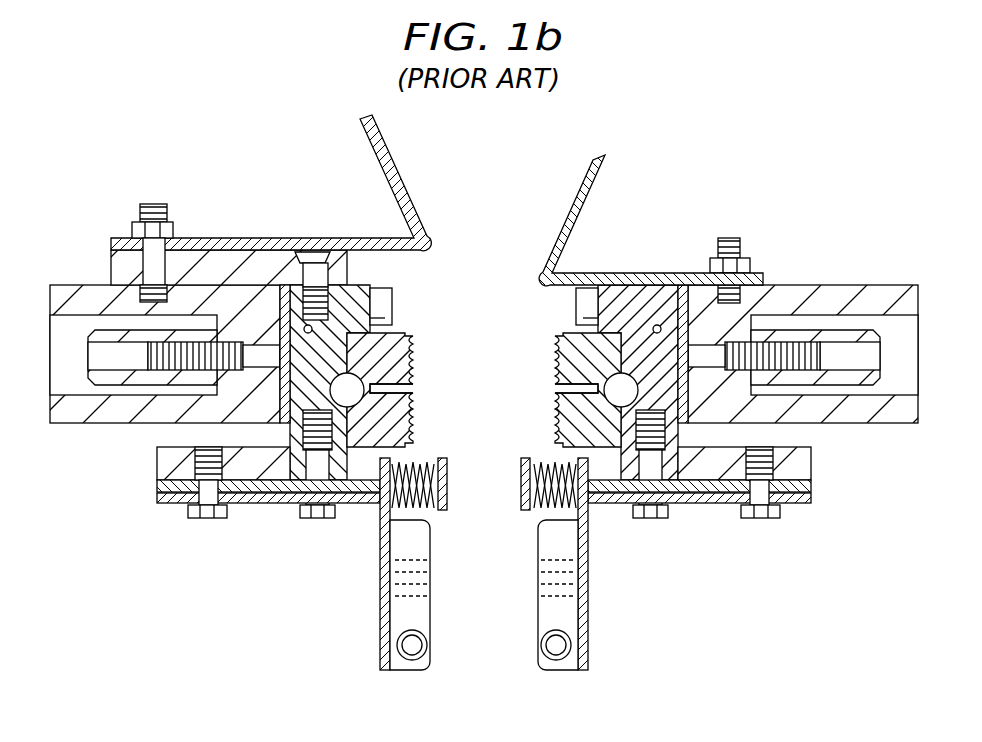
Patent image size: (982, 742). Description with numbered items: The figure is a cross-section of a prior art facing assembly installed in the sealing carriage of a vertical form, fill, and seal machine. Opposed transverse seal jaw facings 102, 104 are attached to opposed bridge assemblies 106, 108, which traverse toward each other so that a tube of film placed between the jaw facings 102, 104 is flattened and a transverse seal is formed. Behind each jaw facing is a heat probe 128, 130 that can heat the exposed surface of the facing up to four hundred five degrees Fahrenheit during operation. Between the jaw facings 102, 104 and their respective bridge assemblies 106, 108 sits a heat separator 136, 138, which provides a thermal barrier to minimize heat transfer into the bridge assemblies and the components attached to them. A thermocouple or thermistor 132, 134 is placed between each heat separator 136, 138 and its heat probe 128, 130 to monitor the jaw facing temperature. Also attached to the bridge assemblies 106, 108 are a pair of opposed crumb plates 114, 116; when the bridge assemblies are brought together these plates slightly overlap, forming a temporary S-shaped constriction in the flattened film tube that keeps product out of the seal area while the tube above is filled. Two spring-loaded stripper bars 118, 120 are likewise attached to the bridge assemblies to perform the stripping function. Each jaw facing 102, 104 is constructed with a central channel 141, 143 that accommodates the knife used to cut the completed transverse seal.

The transverse seal jaw facing 102 is at (405, 330).
The transverse seal jaw facing 104 is at (552, 355).
The bridge assembly 106 is at (80, 284).
The bridge assembly 108 is at (832, 285).
The crumb plate 114 is at (398, 166).
The crumb plate 116 is at (565, 210).
The stripper bar 118 is at (447, 500).
The stripper bar 120 is at (518, 470).
The heat probe 128 is at (356, 380).
The heat probe 130 is at (613, 398).
The thermocouple or thermistor 132 is at (306, 324).
The thermocouple or thermistor 134 is at (655, 325).
The heat separator 136 is at (283, 394).
The heat separator 138 is at (684, 305).
The central channel 141 is at (414, 390).
The central channel 143 is at (552, 390).